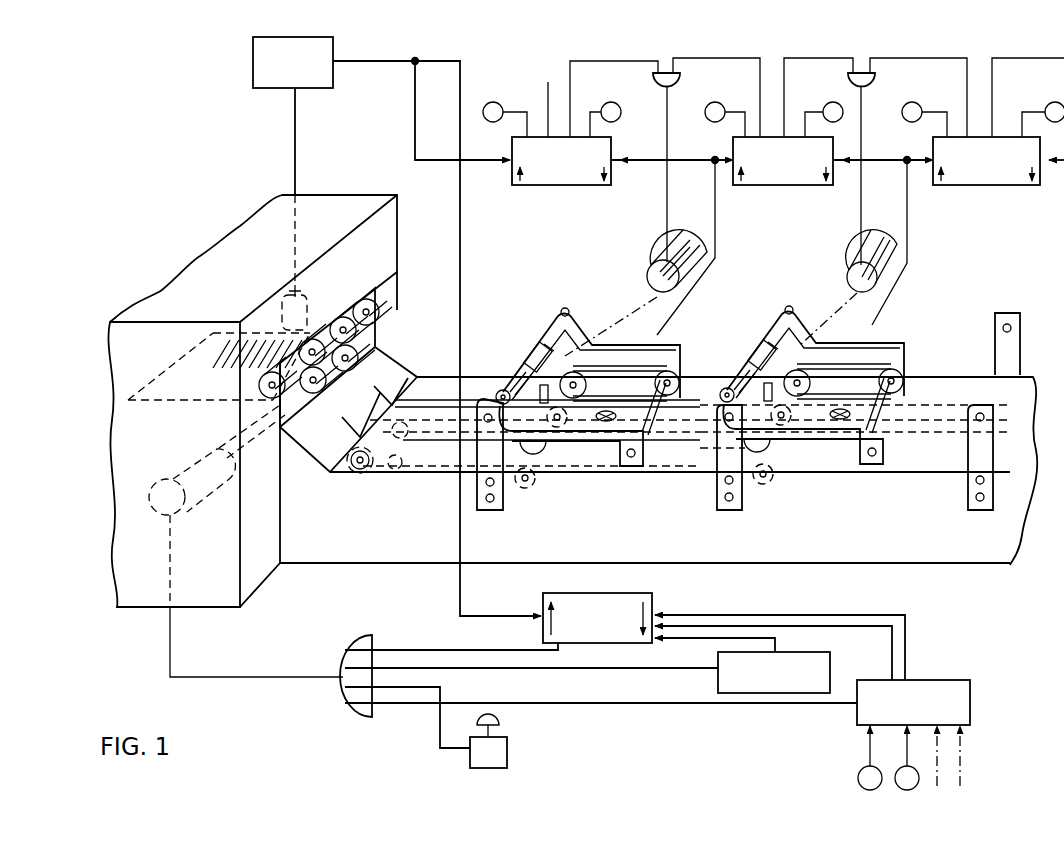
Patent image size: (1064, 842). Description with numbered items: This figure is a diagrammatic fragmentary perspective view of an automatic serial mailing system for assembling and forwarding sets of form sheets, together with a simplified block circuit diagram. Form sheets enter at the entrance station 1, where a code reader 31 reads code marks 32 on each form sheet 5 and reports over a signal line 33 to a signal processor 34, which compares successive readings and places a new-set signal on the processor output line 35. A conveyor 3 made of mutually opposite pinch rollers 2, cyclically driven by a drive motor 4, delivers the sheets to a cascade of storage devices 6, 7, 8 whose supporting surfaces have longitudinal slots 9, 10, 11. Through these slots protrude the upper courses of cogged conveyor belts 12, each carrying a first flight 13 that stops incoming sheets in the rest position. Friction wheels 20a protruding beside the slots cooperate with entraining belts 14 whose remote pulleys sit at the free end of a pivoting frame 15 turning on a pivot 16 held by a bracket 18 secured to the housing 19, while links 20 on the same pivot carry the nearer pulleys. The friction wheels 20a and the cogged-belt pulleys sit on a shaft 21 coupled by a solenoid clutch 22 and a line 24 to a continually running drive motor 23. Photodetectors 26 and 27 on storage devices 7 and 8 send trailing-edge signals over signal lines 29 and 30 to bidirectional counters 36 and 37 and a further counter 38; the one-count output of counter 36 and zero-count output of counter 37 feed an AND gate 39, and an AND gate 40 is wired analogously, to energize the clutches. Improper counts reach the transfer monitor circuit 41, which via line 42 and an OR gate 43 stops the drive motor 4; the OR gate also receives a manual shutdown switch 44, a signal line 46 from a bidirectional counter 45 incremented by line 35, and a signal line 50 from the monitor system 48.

The entrance station 1 is at (160, 305).
The pinch rollers 2 is at (352, 308).
The conveyor 3 is at (264, 462).
The drive motor 4 is at (165, 470).
The form sheet 5 is at (167, 382).
The storage device 6 is at (575, 385).
The storage device 7 is at (795, 416).
The storage device 8 is at (978, 361).
The slot 9 is at (417, 443).
The slot 10 is at (687, 437).
The slot 11 is at (920, 433).
The cogged conveyor belt 12 is at (392, 468).
The first flight 13 is at (520, 350).
The entraining belt 14 is at (625, 355).
The pivoting frame 15 is at (630, 352).
The pivot 16 is at (498, 338).
The bracket 18 is at (486, 465).
The housing 19 is at (917, 550).
The link 20 is at (510, 372).
The friction wheel 20a is at (530, 480).
The shaft 21 is at (692, 302).
The solenoid clutch 22 is at (660, 264).
The drive motor 23 is at (680, 236).
The line 24 is at (665, 123).
The photodetector 26 is at (604, 418).
The photodetector 27 is at (837, 416).
The signal line 29 is at (716, 208).
The signal line 30 is at (908, 205).
The code reader 31 is at (285, 305).
The code marks 32 is at (228, 340).
The signal line 33 is at (295, 160).
The signal processor 34 is at (253, 70).
The processor output line 35 is at (383, 64).
The bidirectional counter 36 is at (538, 188).
The bidirectional counter 37 is at (800, 188).
The counter 38 is at (948, 121).
The AND gate 39 is at (684, 82).
The AND gate 40 is at (876, 82).
The transfer monitor circuit 41 is at (972, 705).
The line 42 is at (593, 703).
The OR gate 43 is at (352, 703).
The shutdown switch 44 is at (508, 752).
The bidirectional counter 45 is at (617, 598).
The signal line 46 is at (418, 648).
The monitor system 48 is at (832, 664).
The signal line 50 is at (658, 668).